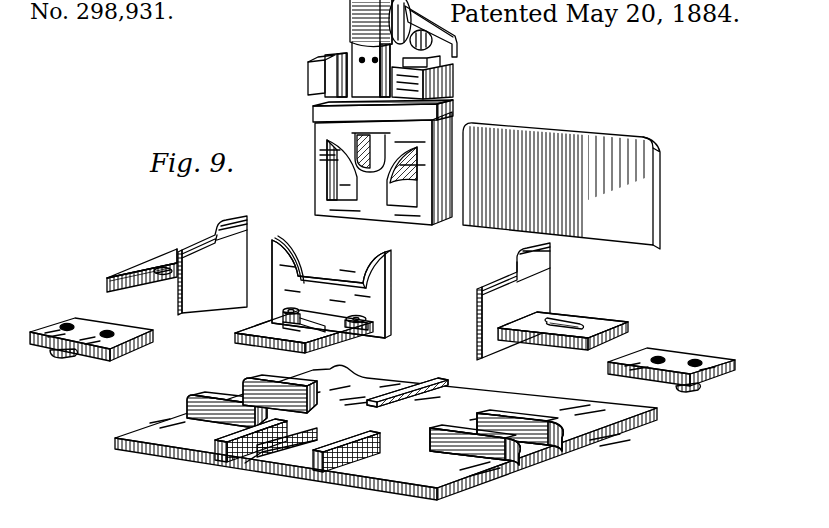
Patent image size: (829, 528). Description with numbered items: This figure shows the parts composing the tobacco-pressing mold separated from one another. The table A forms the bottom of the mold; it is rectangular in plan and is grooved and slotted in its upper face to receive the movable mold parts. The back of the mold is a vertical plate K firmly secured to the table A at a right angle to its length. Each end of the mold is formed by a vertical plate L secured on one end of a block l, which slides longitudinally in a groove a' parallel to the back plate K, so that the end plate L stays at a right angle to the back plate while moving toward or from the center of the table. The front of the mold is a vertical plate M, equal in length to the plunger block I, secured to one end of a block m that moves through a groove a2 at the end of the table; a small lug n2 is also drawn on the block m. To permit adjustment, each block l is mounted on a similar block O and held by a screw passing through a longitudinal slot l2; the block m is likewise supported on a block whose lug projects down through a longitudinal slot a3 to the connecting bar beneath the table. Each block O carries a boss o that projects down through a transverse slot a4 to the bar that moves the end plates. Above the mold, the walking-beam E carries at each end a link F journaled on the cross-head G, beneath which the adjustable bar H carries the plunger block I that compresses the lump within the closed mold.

The table A is at (386, 436).
The groove a' is at (520, 422).
The groove a2 is at (243, 458).
The longitudinal slot a3 is at (303, 460).
The transverse slot a4 is at (527, 450).
The walking-beam E is at (457, 47).
The link F is at (359, 48).
The cross-head G is at (449, 80).
The bar H is at (316, 110).
The block I is at (420, 140).
The vertical plate K is at (561, 186).
The vertical plate L is at (367, 288).
The block l is at (133, 278).
The longitudinal slot l2 is at (165, 267).
The vertical plate M is at (313, 299).
The block m is at (353, 334).
The lug n2 is at (281, 325).
The block O is at (382, 351).
The boss o is at (68, 358).